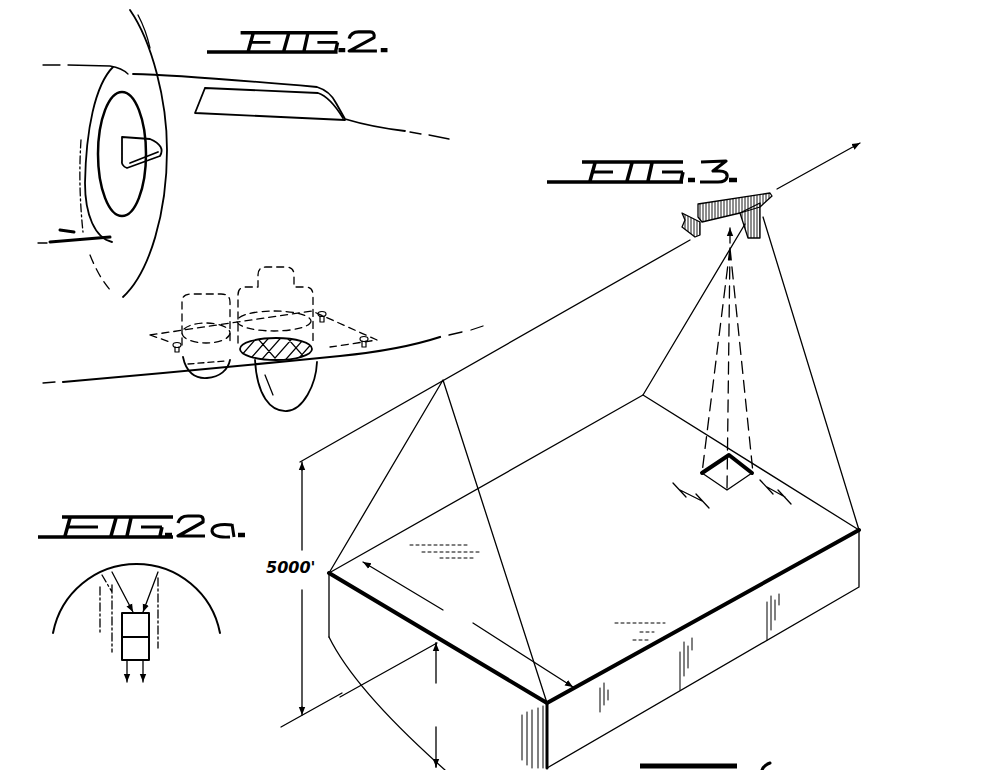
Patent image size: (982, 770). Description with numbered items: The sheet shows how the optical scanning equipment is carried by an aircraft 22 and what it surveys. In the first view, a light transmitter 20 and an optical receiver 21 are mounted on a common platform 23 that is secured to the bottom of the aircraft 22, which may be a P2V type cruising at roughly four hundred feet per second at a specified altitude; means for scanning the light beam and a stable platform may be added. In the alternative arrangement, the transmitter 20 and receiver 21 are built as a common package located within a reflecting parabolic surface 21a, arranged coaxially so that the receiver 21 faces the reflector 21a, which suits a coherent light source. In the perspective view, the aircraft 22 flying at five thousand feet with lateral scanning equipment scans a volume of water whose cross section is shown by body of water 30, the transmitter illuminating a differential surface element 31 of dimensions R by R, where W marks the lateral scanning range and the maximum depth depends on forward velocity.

In FIG. 2, the light transmitter 20 is at (307, 290).
In FIG. 2A, the light transmitter 20 is at (143, 654).
In FIG. 2, the optical receiver 21 is at (203, 290).
In FIG. 2A, the optical receiver 21 is at (140, 624).
In FIG. 2A, the reflecting parabolic surface 21a is at (193, 596).
In FIG. 2, the aircraft 22 is at (381, 115).
In FIG. 3, the aircraft 22 is at (688, 228).
In FIG. 2, the common platform 23 is at (355, 323).
In FIG. 3, the body of water 30 is at (646, 581).
In FIG. 3, the differential surface element 31 is at (720, 472).